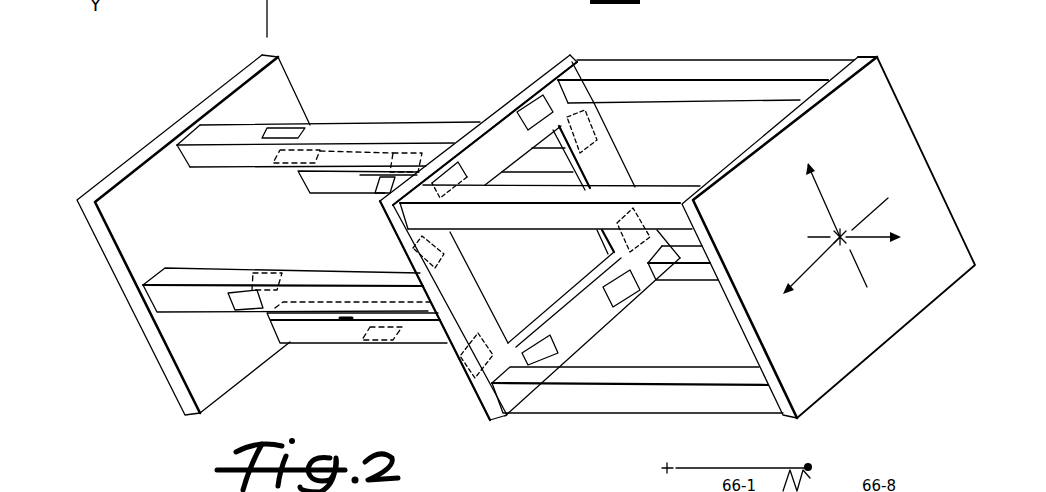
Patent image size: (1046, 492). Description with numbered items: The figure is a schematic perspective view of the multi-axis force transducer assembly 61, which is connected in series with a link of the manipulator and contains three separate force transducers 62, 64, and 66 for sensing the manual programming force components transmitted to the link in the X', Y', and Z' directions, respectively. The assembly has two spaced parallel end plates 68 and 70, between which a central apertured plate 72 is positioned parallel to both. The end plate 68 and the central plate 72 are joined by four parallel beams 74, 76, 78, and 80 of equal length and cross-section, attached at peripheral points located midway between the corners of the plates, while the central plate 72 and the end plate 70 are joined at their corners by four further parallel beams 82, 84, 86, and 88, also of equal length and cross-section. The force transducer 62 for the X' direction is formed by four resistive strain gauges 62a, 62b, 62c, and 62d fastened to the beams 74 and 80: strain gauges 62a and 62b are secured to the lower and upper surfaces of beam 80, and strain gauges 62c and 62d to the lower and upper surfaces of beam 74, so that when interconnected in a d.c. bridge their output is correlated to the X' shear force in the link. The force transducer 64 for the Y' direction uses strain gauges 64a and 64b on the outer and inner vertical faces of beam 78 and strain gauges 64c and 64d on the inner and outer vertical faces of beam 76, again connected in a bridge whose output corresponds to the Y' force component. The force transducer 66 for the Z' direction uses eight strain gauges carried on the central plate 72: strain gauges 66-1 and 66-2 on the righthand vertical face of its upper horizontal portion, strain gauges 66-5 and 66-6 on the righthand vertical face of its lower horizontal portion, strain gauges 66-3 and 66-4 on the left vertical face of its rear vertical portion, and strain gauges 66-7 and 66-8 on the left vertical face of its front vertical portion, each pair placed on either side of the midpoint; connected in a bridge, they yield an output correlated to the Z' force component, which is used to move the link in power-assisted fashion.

The multi-axis force transducer assembly 61 is at (952, 361).
The force transducer 62 is at (364, 122).
The resistive strain gauge 62a is at (385, 342).
The resistive strain gauge 62b is at (347, 320).
The resistive strain gauge 62c is at (312, 135).
The resistive strain gauge 62d is at (287, 128).
The force transducer 64 is at (175, 300).
The resistive strain gauge 64a is at (242, 302).
The resistive strain gauge 64b is at (270, 270).
The resistive strain gauge 64c is at (378, 195).
The resistive strain gauge 64d is at (417, 135).
The force transducer 66 is at (568, 53).
The resistive strain gauge 66-1 is at (462, 160).
The resistive strain gauge 66-2 is at (535, 108).
The resistive strain gauge 66-3 is at (590, 118).
The resistive strain gauge 66-4 is at (645, 205).
The resistive strain gauge 66-5 is at (623, 295).
The resistive strain gauge 66-6 is at (560, 355).
The resistive strain gauge 66-7 is at (462, 380).
The resistive strain gauge 66-8 is at (447, 258).
The end plate 68 is at (222, 390).
The end plate 70 is at (835, 383).
The central apertured plate 72 is at (452, 330).
The beam 74 is at (207, 157).
The beam 76 is at (313, 180).
The beam 78 is at (190, 280).
The beam 80 is at (302, 340).
The beam 82 is at (747, 68).
The beam 84 is at (697, 272).
The beam 86 is at (722, 403).
The beam 88 is at (563, 222).